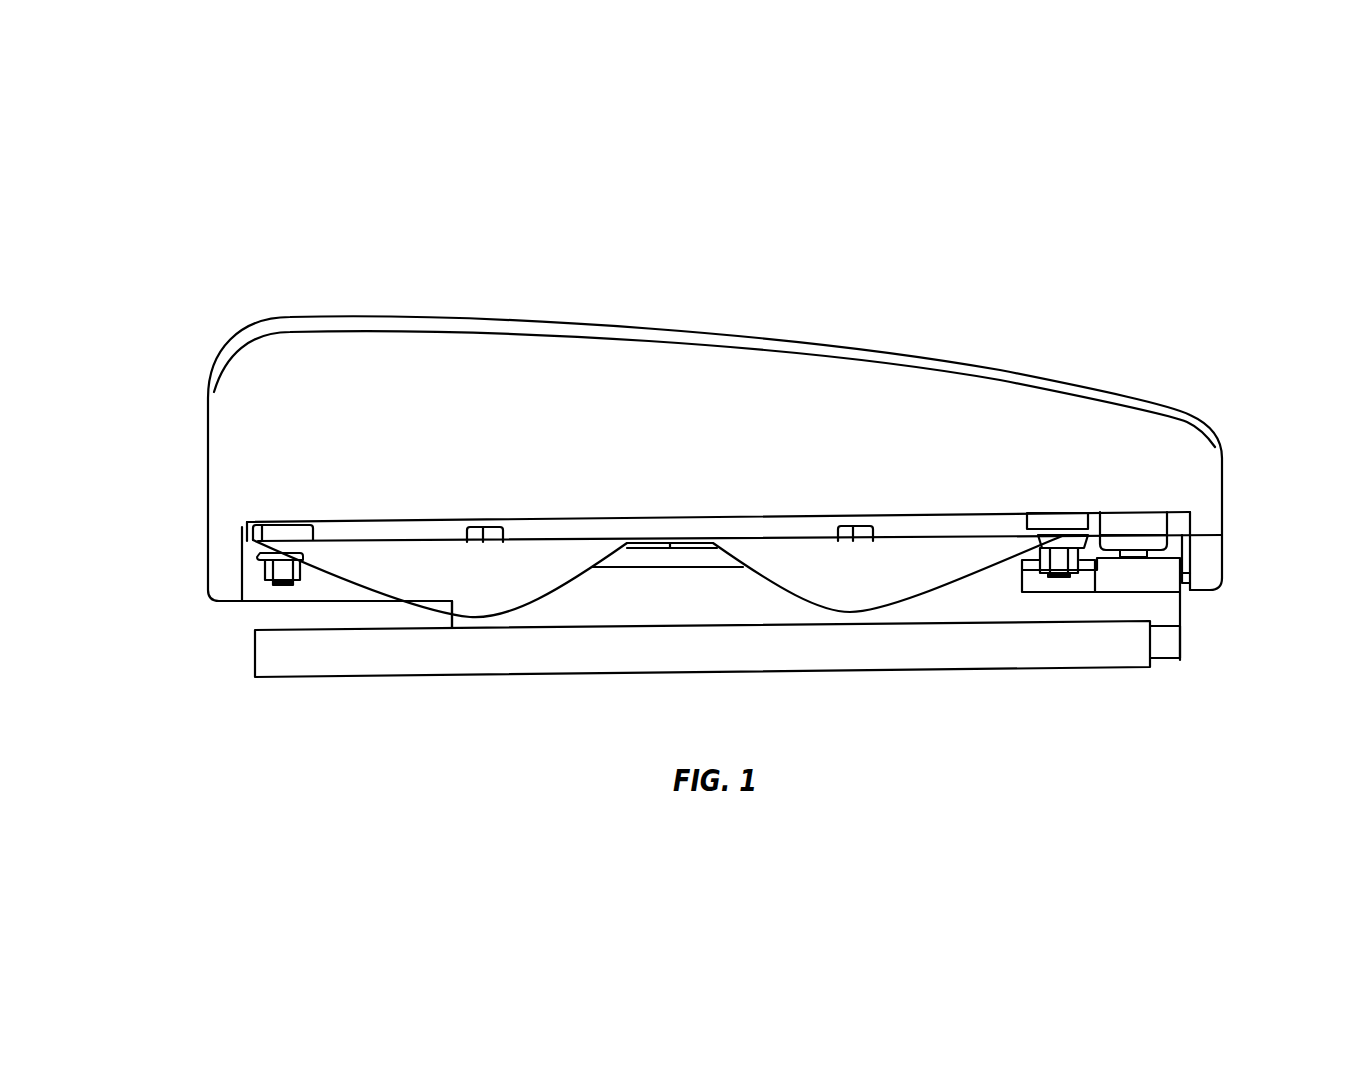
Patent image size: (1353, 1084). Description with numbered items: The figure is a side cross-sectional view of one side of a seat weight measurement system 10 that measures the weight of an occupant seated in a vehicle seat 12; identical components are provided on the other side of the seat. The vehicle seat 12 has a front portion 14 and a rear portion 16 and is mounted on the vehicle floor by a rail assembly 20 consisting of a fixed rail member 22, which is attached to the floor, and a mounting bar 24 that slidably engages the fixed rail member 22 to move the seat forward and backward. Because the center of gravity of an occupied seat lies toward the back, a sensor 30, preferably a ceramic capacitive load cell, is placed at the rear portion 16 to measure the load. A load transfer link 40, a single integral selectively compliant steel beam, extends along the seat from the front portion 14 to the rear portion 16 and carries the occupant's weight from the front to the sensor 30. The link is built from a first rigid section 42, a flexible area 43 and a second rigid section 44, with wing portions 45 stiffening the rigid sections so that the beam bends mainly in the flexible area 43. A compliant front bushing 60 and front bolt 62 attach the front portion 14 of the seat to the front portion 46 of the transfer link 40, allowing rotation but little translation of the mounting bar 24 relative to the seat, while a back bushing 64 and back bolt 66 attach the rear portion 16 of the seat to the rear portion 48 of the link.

The seat weight measurement system 10 is at (222, 278).
The vehicle seat 12 is at (722, 370).
The front portion 14 is at (218, 459).
The rear portion 16 is at (1205, 455).
The rail assembly 20 is at (1218, 604).
The fixed rail member 22 is at (1062, 655).
The mounting bar 24 is at (1170, 612).
The sensor 30 is at (1150, 527).
The load transfer link 40 is at (977, 525).
The first rigid section 42 is at (377, 530).
The flexible area 43 is at (661, 528).
The second rigid section 44 is at (830, 578).
The wing portions 45 is at (467, 612).
The front portion of the transfer link 46 is at (254, 538).
The rear portion of the transfer link 48 is at (1193, 537).
The front bushing 60 is at (258, 543).
The front bolt 62 is at (277, 587).
The back bushing 64 is at (1090, 537).
The back bolt 66 is at (1055, 578).